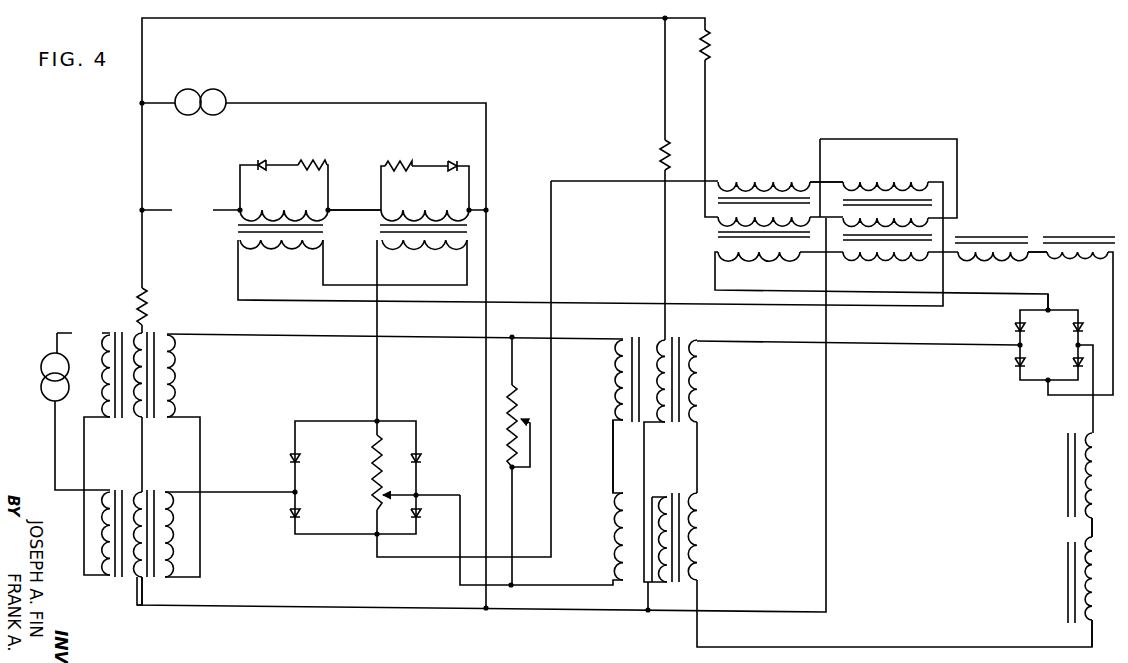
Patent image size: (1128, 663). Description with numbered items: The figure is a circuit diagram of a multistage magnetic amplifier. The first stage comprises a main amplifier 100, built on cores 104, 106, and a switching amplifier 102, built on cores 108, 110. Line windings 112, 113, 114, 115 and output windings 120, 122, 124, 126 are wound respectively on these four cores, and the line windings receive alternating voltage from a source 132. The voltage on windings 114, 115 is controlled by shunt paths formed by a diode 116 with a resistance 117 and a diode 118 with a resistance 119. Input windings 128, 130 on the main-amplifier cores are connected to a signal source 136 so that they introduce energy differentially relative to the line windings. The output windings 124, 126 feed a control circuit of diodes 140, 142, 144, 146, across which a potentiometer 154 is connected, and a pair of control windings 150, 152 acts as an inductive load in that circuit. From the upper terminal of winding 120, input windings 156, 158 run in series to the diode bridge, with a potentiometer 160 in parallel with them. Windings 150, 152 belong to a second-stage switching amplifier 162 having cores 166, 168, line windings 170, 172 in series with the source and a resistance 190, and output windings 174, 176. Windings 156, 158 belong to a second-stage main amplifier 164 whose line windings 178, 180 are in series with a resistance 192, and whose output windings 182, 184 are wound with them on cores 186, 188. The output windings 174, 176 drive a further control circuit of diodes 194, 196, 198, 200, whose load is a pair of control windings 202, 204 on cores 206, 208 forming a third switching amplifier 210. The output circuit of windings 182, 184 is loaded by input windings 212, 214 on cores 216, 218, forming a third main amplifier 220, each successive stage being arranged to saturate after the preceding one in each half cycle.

The main amplifier 100 is at (156, 492).
The switching amplifier 102 is at (335, 205).
The core 104 is at (118, 420).
The core 106 is at (128, 494).
The core 108 is at (236, 228).
The core 110 is at (380, 227).
The line winding 112 is at (138, 322).
The line winding 113 is at (136, 585).
The line winding 114 is at (270, 210).
The line winding 115 is at (410, 210).
The diode 116 is at (262, 158).
The resistance 117 is at (318, 160).
The diode 118 is at (452, 160).
The resistance 119 is at (392, 162).
The output winding 120 is at (179, 366).
The output winding 122 is at (178, 542).
The output winding 124 is at (283, 243).
The output winding 126 is at (404, 244).
The input winding 128 is at (104, 392).
The input winding 130 is at (106, 578).
The source of alternating line voltage 132 is at (195, 114).
The signal source 136 is at (41, 366).
The diode 140 is at (420, 456).
The diode 142 is at (420, 514).
The diode 144 is at (289, 456).
The diode 146 is at (289, 512).
The control winding 150 is at (746, 182).
The control winding 152 is at (890, 184).
The potentiometer 154 is at (372, 462).
The input winding 156 is at (612, 392).
The input winding 158 is at (613, 542).
The potentiometer 160 is at (508, 410).
The switching amplifier 162 is at (798, 185).
The main amplifier 164 is at (612, 410).
The core 166 is at (716, 212).
The core 168 is at (936, 204).
The line winding 170 is at (716, 230).
The line winding 172 is at (936, 223).
The output winding 174 is at (762, 254).
The output winding 176 is at (884, 256).
The line winding 178 is at (652, 336).
The line winding 180 is at (664, 497).
The output winding 182 is at (698, 398).
The output winding 184 is at (698, 550).
The core 186 is at (648, 424).
The core 188 is at (680, 498).
The resistance 190 is at (712, 50).
The resistance 192 is at (660, 152).
The diode 194 is at (1084, 324).
The diode 196 is at (1072, 362).
The diode 198 is at (1013, 325).
The diode 200 is at (1013, 362).
The control winding 202 is at (984, 254).
The control winding 204 is at (1077, 254).
The core 206 is at (1020, 236).
The core 208 is at (1100, 237).
The switching amplifier 210 is at (1038, 232).
The input winding 212 is at (1086, 430).
The input winding 214 is at (1086, 624).
The core 216 is at (1067, 459).
The core 218 is at (1067, 582).
The main amplifier 220 is at (1060, 504).